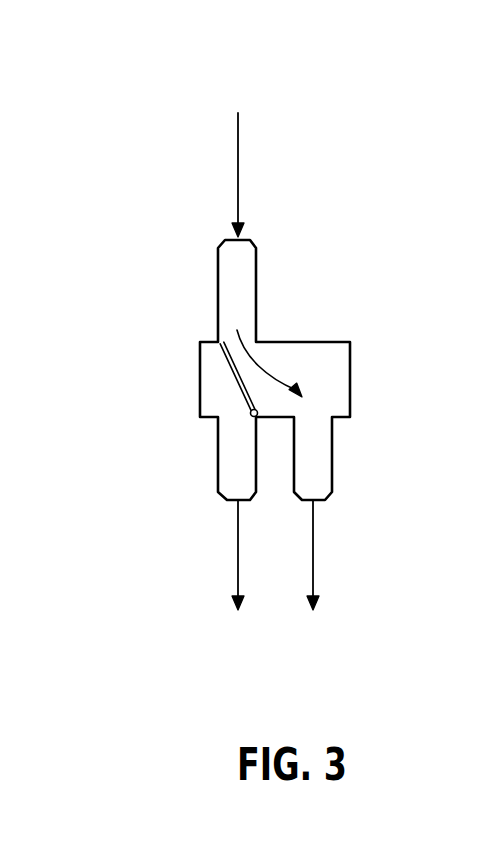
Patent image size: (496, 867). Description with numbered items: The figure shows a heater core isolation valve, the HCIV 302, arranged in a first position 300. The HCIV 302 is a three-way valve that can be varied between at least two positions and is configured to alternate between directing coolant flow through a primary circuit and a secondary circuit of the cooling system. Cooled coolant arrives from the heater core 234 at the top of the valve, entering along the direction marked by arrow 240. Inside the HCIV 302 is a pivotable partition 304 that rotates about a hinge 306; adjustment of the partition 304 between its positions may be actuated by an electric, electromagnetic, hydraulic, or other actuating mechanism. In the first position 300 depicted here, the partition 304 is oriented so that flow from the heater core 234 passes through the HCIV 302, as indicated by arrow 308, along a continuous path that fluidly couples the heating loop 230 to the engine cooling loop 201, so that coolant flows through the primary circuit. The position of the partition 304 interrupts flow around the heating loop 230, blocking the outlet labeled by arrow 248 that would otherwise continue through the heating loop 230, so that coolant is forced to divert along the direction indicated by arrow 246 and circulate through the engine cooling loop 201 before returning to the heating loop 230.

The first position 300 is at (126, 73).
The heater core 234 is at (238, 89).
The coolant inlet flow from heater core 240 is at (238, 163).
The heater core isolation valve 302 is at (308, 331).
The pivotable partition 304 is at (228, 372).
The hinge 306 is at (250, 414).
The arrow 308 is at (283, 365).
The outlet flow continuing through heating loop 248 is at (238, 558).
The arrow 246 is at (313, 543).
The heating loop 230 is at (226, 669).
The engine cooling loop 201 is at (332, 656).